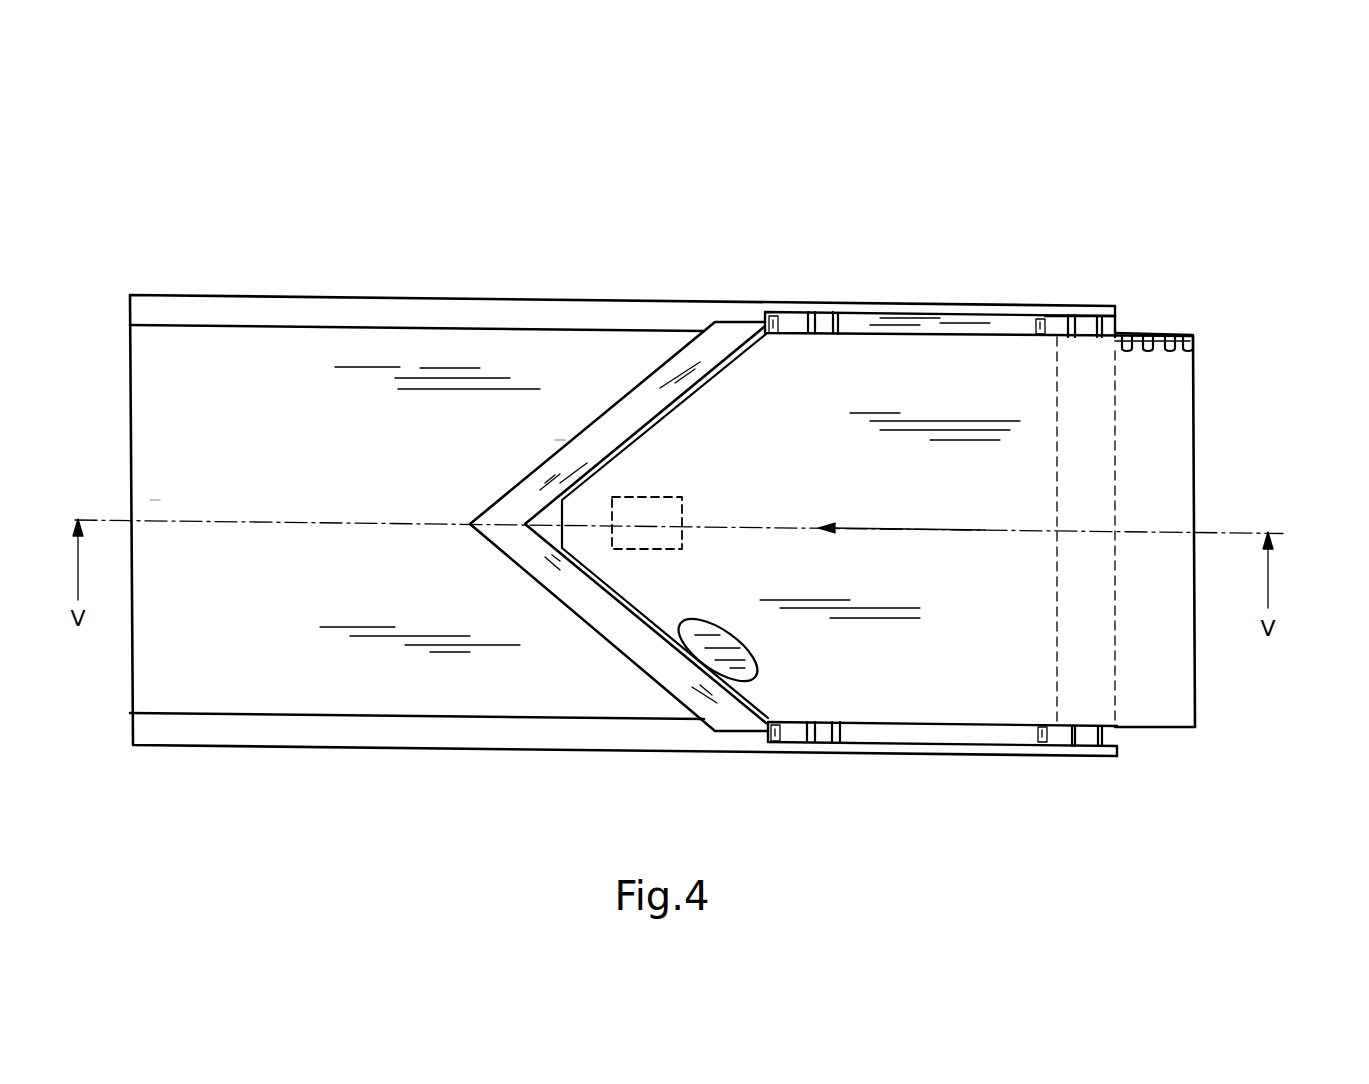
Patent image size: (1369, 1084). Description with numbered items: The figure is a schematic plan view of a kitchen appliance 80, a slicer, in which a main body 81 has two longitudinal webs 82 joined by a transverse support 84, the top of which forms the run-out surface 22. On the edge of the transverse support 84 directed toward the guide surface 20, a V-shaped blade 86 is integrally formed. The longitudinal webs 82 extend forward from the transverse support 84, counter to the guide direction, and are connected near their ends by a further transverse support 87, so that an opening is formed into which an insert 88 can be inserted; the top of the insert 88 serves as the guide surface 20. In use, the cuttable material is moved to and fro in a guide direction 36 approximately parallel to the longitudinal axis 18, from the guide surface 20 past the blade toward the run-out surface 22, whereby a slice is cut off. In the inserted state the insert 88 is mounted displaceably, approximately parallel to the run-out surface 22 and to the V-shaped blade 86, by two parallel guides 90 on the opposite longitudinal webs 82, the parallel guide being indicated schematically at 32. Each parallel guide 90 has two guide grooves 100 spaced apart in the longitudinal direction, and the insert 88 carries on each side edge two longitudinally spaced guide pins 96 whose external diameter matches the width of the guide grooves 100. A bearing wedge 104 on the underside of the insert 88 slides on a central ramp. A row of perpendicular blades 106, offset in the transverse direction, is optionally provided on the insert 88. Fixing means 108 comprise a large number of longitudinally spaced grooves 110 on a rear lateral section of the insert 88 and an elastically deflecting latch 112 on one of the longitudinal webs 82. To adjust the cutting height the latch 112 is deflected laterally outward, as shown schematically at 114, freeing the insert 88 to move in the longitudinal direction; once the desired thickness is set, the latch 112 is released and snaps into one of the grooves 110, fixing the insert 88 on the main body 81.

The longitudinal axis 18 is at (180, 524).
The guide surface 20 is at (976, 360).
The run-out surface 22 is at (560, 368).
The parallel guide 32 is at (1099, 228).
The guide direction 36 is at (905, 535).
The kitchen appliance 80 is at (1238, 233).
The main body 81 is at (285, 292).
The longitudinal webs 82 is at (452, 300).
The transverse support 84 is at (170, 462).
The V-shaped blade 86 is at (737, 320).
The further transverse support 87 is at (1117, 685).
The insert 88 is at (1172, 472).
The parallel guides 90 is at (860, 330).
The guide pins 96 is at (775, 318).
The guide grooves 100 is at (828, 332).
The bearing wedge 104 is at (645, 550).
The row of perpendicular blades 106 is at (735, 670).
The fixing means 108 is at (1210, 355).
The grooves 110 is at (1140, 347).
The latch 112 is at (1143, 330).
The lateral outward deflection of the catch 114 is at (1181, 296).